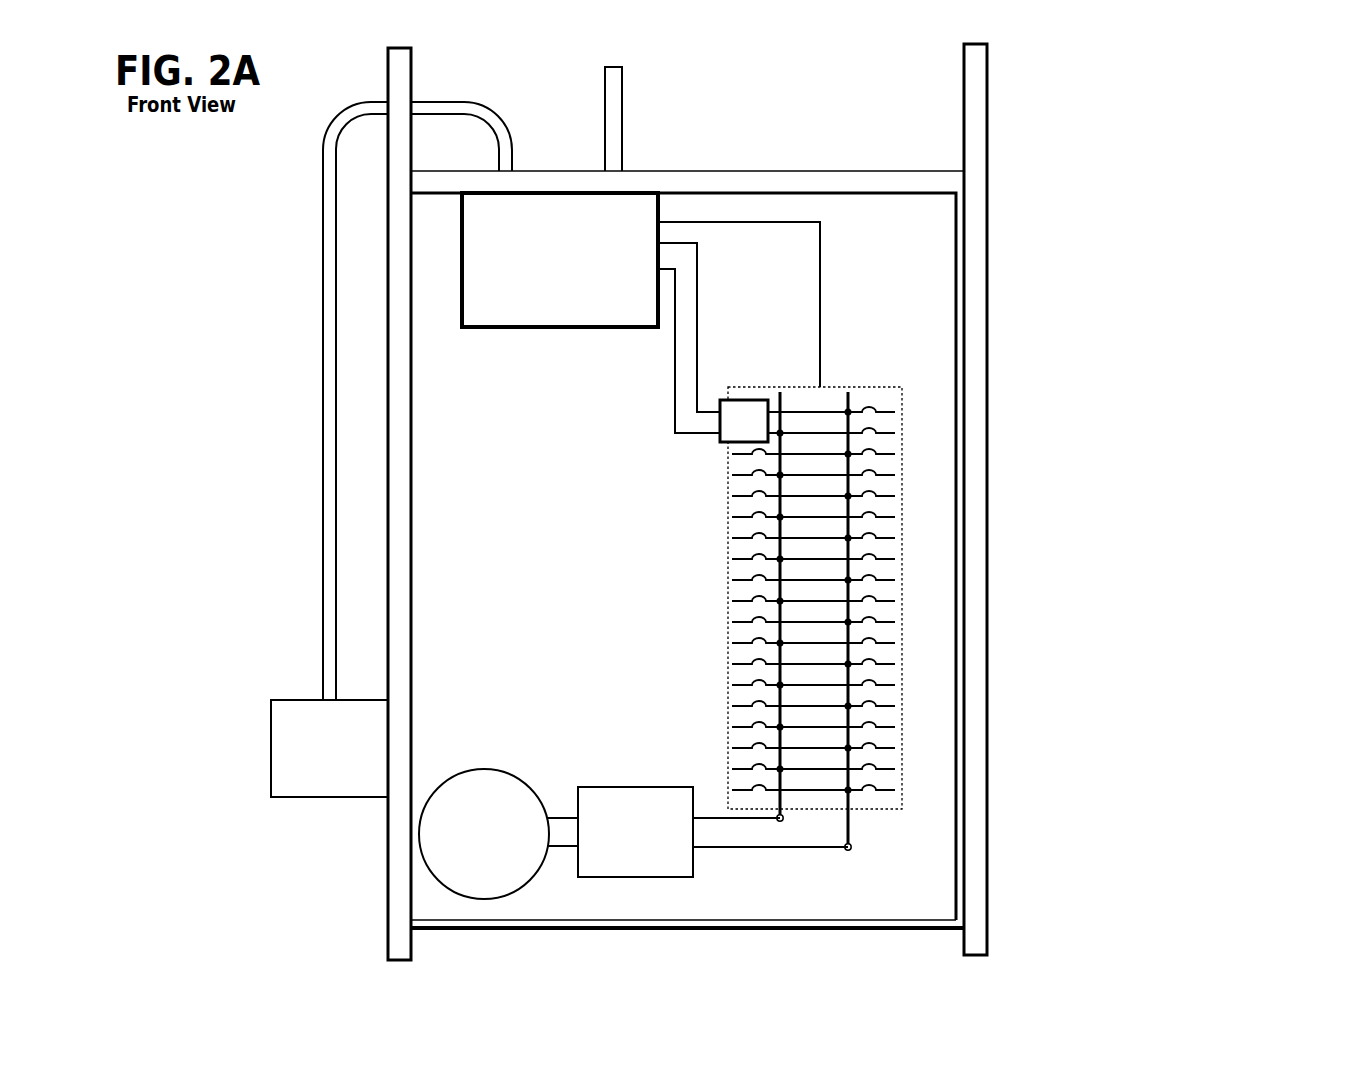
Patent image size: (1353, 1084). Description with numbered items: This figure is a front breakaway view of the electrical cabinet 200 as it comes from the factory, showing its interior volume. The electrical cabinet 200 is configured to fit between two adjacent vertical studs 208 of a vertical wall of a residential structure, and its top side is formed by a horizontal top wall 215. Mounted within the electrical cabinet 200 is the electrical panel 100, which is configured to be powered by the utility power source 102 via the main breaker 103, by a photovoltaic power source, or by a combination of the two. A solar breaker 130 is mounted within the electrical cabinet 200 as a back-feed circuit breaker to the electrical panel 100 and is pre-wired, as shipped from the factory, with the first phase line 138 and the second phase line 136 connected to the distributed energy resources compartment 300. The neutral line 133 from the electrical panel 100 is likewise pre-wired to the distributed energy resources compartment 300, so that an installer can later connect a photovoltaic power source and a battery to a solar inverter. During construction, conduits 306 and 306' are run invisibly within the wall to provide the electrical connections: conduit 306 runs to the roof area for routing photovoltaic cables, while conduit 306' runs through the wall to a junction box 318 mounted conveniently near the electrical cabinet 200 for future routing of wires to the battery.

The electrical panel 100 is at (902, 540).
The utility power source 102 is at (497, 863).
The main breaker 103 is at (624, 861).
The solar circuit breaker 130 is at (718, 398).
The neutral line 133 is at (820, 260).
The phase L2 line 136 is at (675, 361).
The phase L1 line 138 is at (698, 263).
The electrical cabinet 200 is at (1138, 680).
The vertical studs 208 is at (1077, 880).
The horizontal top wall 215 is at (822, 192).
The distributed energy resources compartment 300 is at (647, 307).
The conduit 306 is at (689, 119).
The conduit 306' is at (379, 401).
The junction box 318 is at (271, 745).